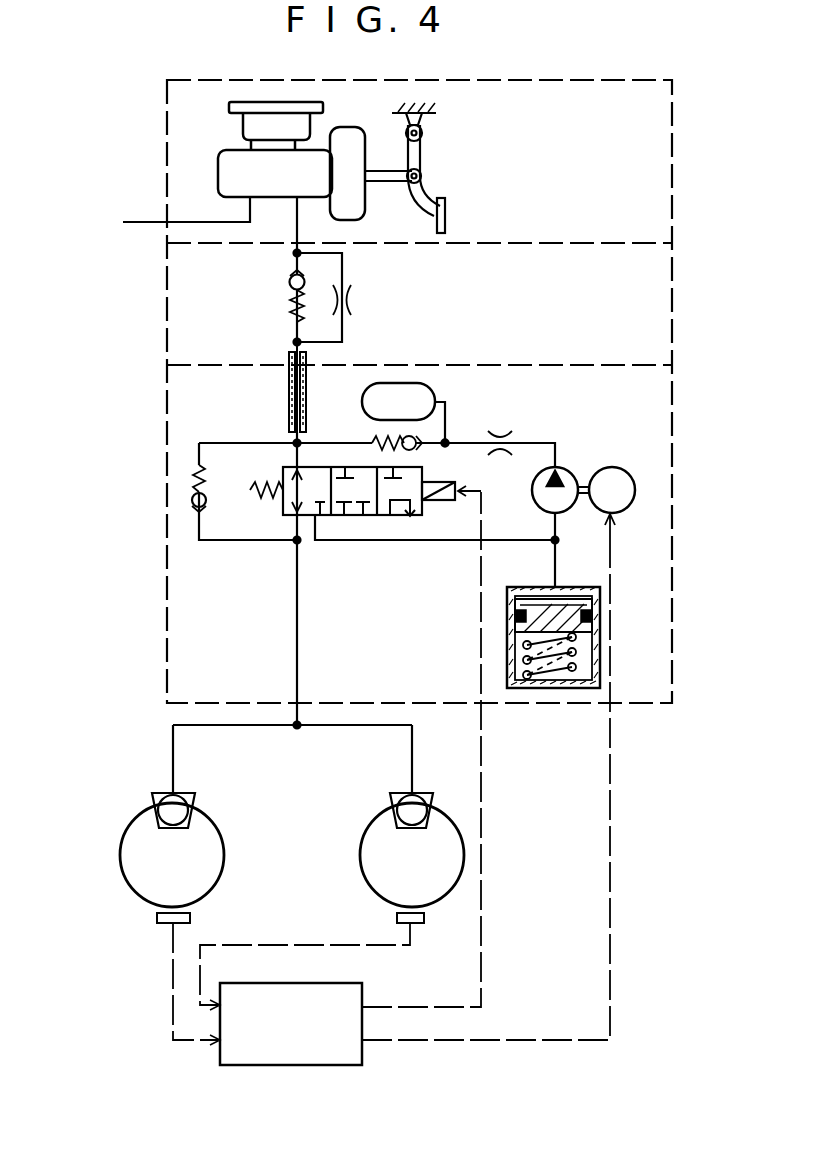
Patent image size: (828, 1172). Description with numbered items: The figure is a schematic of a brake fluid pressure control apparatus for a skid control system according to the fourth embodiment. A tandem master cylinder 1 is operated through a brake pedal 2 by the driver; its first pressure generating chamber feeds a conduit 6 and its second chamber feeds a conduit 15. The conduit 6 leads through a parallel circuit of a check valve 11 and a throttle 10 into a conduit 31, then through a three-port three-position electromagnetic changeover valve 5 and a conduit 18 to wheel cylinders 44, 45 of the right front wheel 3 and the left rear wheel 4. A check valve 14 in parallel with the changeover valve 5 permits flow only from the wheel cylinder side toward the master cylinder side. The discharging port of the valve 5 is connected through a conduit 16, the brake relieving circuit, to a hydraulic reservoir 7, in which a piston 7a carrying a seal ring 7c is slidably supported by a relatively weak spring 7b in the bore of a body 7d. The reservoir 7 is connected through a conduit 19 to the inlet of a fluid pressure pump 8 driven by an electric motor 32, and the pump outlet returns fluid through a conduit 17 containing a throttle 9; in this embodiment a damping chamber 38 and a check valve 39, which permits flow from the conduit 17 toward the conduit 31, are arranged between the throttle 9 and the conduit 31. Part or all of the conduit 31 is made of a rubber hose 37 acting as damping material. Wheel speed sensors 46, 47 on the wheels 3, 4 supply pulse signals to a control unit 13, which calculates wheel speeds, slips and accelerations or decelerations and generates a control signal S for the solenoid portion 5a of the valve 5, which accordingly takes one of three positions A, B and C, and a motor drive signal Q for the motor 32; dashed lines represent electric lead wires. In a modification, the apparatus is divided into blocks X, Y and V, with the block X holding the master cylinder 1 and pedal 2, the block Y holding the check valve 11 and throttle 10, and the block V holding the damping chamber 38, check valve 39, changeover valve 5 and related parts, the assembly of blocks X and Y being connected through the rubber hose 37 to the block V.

The tandem master cylinder 1 is at (236, 160).
The brake pedal 2 is at (446, 211).
The right front wheel 3 is at (222, 848).
The left rear wheel 4 is at (361, 848).
The three-port three-position electromagnetic changeover valve 5 is at (271, 466).
The solenoid portion 5a is at (438, 502).
The conduit 6 is at (296, 218).
The hydraulic reservoir 7 is at (582, 636).
The piston 7a is at (529, 606).
The spring 7b is at (585, 651).
The seal ring 7c is at (594, 617).
The body 7d is at (561, 690).
The fluid pressure pump 8 is at (565, 468).
The throttle 9 is at (499, 430).
The throttle 10 is at (354, 300).
The check valve 11 is at (289, 282).
The control unit 13 is at (283, 983).
The check valve 14 is at (205, 506).
The conduit 15 is at (187, 221).
The conduit 16 is at (439, 542).
The conduit 17 is at (440, 445).
The conduit 18 is at (296, 653).
The conduit 19 is at (553, 528).
The conduit 31 is at (294, 438).
The electric motor 32 is at (622, 468).
The rubber hose 37 is at (290, 356).
The damping chamber 38 is at (422, 385).
The check valve 39 is at (396, 438).
The wheel cylinder 44 is at (177, 800).
The wheel cylinder 45 is at (414, 800).
The wheel speed sensor 46 is at (190, 919).
The wheel speed sensor 47 is at (425, 919).
The valve position A is at (316, 518).
The valve position B is at (355, 518).
The valve position C is at (403, 518).
The block X is at (674, 157).
The block Y is at (674, 295).
The block V is at (674, 527).
The control signal S is at (483, 875).
The motor drive signal Q is at (612, 893).